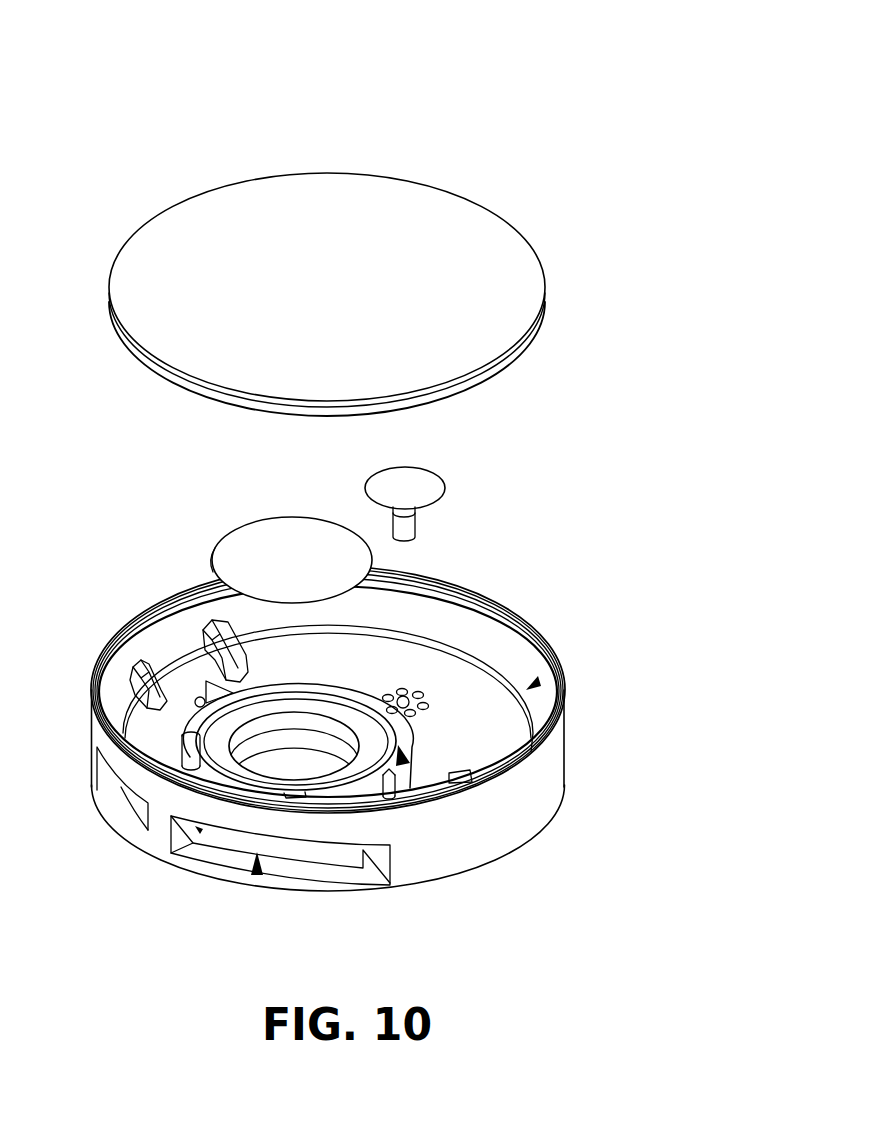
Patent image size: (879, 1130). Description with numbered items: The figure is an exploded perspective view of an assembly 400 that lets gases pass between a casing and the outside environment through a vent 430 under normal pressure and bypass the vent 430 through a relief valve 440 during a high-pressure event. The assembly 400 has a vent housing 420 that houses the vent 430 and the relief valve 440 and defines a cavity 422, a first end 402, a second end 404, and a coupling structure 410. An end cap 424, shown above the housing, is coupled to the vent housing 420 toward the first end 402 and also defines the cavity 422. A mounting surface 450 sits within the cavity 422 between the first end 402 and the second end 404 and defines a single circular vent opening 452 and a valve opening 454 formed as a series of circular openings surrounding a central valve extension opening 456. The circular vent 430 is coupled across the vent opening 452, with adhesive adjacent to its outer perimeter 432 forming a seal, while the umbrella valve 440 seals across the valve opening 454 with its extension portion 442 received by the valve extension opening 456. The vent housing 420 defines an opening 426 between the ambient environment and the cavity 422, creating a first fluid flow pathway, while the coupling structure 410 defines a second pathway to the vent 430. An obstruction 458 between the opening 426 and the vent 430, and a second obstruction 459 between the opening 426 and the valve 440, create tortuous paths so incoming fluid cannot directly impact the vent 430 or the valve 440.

The assembly 400 is at (473, 70).
The first end 402 is at (614, 613).
The second end 404 is at (460, 925).
The coupling structure 410 is at (370, 773).
The vent housing 420 is at (551, 763).
The cavity 422 is at (533, 684).
The end cap 424 is at (522, 263).
The opening 426 is at (256, 876).
The vent 430 is at (313, 533).
The outer perimeter 432 is at (213, 549).
The relief valve 440 is at (426, 498).
The extension portion 442 is at (418, 521).
The mounting surface 450 is at (482, 723).
The vent opening 452 is at (242, 768).
The valve opening 454 is at (440, 677).
The valve extension opening 456 is at (403, 695).
The obstruction 458 is at (290, 860).
The second obstruction 459 is at (390, 760).